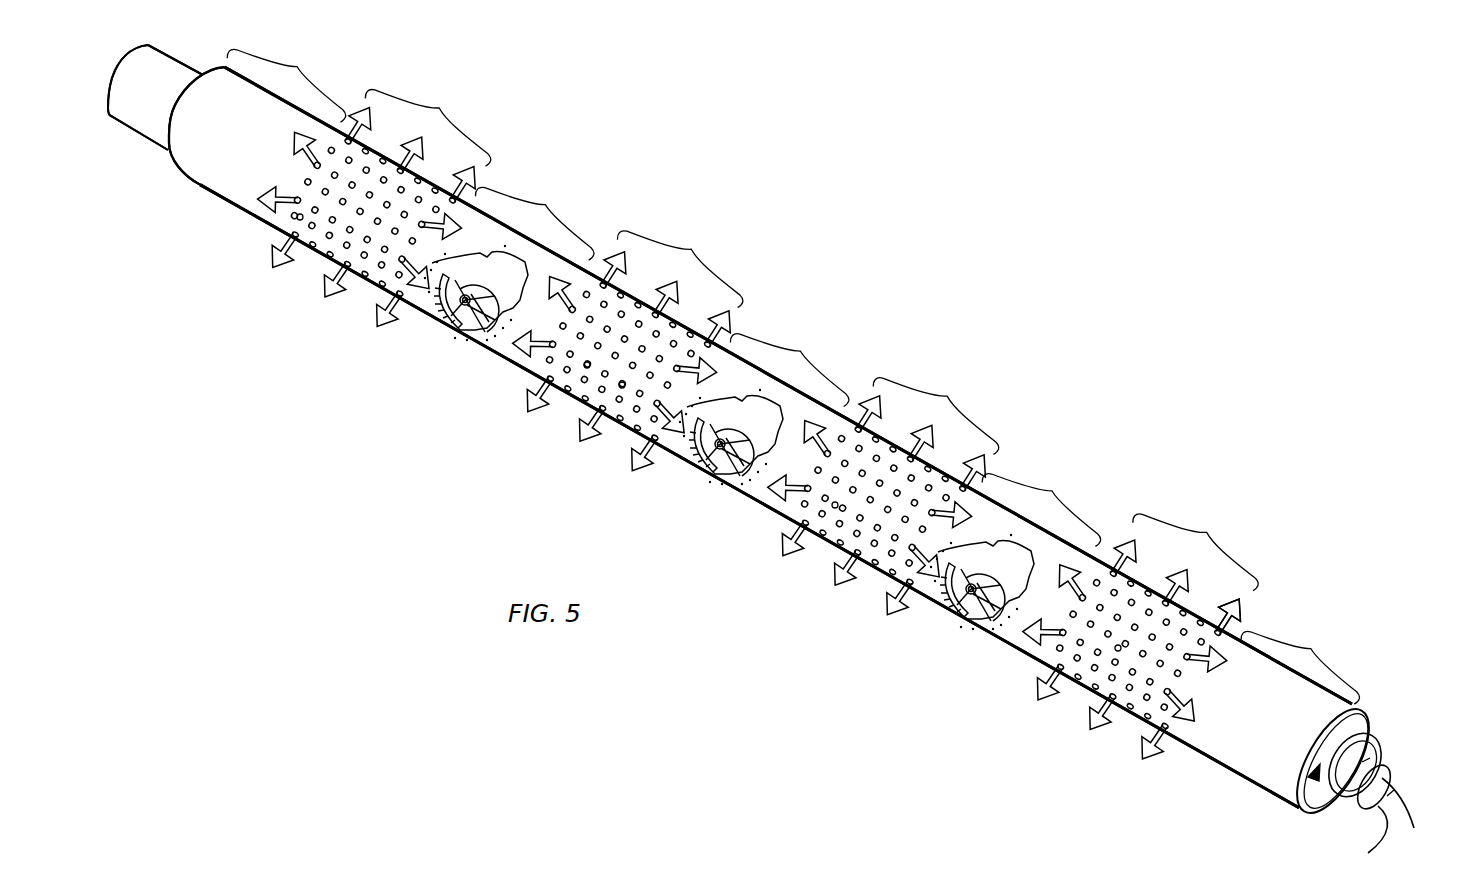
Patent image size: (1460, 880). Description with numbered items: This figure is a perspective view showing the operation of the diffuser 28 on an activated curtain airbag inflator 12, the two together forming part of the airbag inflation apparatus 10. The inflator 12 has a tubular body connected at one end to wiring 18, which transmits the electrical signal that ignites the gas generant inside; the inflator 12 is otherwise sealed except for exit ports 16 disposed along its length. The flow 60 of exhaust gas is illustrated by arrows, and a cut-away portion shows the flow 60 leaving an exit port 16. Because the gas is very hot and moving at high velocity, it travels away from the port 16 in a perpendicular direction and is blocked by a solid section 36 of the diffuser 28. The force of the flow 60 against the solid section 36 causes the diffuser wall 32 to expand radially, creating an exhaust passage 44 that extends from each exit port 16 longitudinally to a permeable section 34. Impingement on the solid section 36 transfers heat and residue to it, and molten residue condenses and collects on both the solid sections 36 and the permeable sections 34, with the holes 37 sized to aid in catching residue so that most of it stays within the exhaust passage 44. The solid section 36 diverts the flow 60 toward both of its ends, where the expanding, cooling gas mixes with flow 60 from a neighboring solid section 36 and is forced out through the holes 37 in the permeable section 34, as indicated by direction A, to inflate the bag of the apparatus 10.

The airbag inflation apparatus 10 is at (1033, 318).
The curtain airbag inflator 12 is at (1340, 734).
The exit ports 16 is at (455, 326).
The wiring 18 is at (1390, 783).
The diffuser 28 is at (860, 328).
The diffuser wall 32 is at (1355, 703).
The permeable section 34 is at (774, 397).
The solid section 36 is at (798, 368).
The holes 37 is at (300, 217).
The exhaust passage 44 is at (485, 292).
The flow 60 is at (318, 140).
The direction of flow A is at (1245, 597).